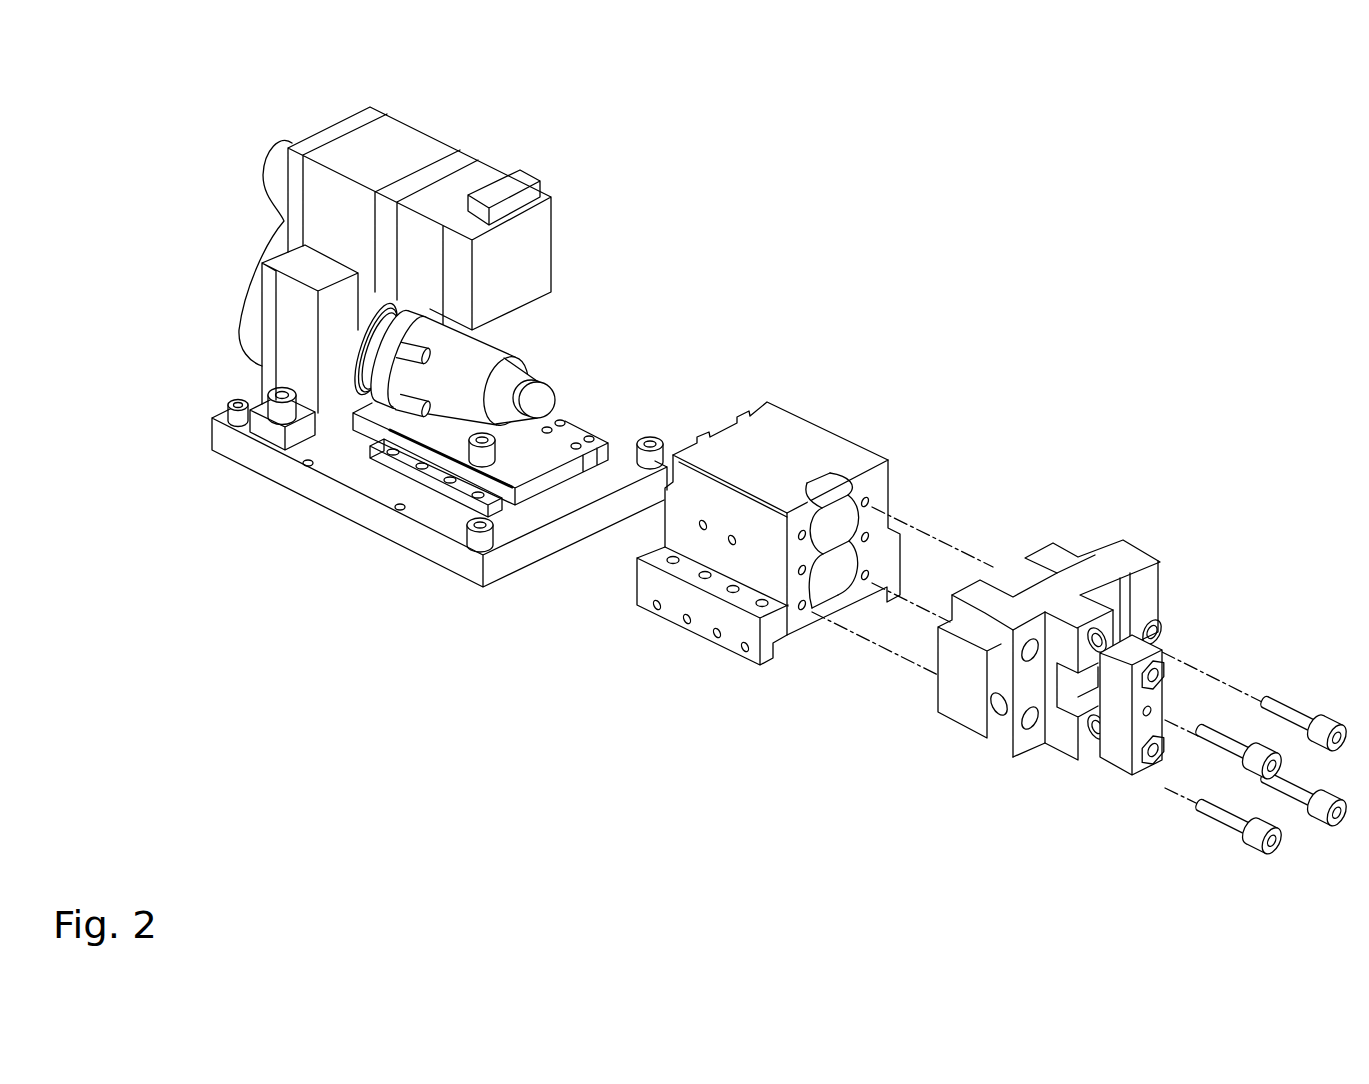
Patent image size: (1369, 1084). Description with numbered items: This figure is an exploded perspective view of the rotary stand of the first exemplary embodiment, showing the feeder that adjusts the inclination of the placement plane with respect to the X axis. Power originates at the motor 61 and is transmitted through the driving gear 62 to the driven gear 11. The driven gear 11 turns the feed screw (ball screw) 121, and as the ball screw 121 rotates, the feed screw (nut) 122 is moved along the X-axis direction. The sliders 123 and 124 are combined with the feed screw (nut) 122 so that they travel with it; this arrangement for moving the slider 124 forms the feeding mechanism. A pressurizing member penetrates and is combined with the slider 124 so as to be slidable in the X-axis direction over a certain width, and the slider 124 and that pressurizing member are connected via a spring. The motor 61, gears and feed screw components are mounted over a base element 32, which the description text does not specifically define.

The driven gear 11 is at (246, 294).
The base plate 32 is at (297, 487).
The motor 61 is at (428, 143).
The driving gear 62 is at (298, 133).
The feed screw (ball screw) 121 is at (547, 382).
The feed screw (nut) 122 is at (520, 356).
The slider 123 is at (835, 437).
The slider 124 is at (1113, 545).